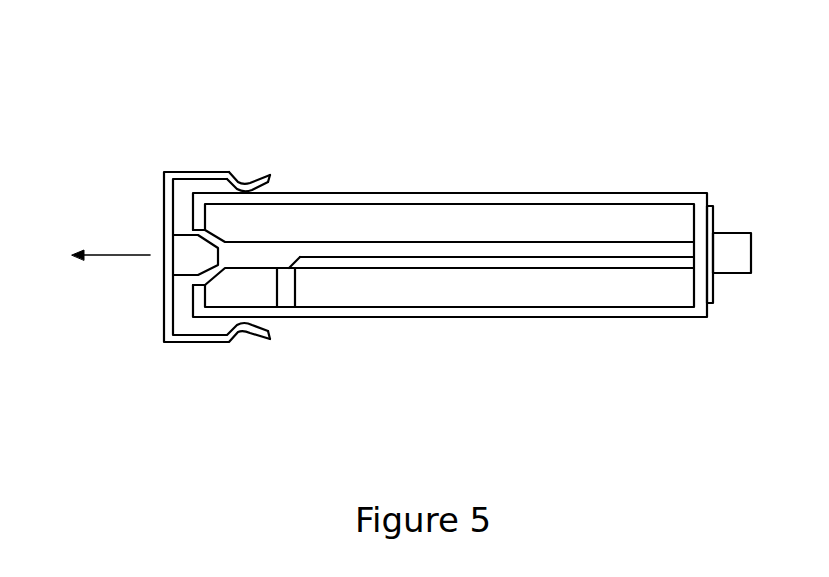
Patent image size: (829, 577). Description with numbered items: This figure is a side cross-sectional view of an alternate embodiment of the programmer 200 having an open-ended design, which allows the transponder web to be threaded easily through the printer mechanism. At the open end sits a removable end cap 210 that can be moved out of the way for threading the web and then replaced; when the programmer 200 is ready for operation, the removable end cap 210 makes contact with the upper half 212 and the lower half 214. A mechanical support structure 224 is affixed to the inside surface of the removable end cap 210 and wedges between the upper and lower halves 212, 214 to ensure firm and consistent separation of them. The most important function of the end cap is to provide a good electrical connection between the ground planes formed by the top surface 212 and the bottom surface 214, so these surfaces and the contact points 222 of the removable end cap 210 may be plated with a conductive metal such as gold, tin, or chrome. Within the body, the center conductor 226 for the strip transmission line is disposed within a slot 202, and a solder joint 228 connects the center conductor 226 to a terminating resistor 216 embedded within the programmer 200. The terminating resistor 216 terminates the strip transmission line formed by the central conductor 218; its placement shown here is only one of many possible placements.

The programmer 200 is at (271, 118).
The slot 202 is at (443, 245).
The removable end cap 210 is at (162, 332).
The upper half 212 is at (538, 192).
The lower half 214 is at (418, 318).
The terminating resistor 216 is at (290, 293).
The central conductor 218 is at (552, 268).
The contact points 222 is at (271, 173).
The mechanical support structure 224 is at (181, 241).
The center conductor 226 is at (640, 257).
The solder joint 228 is at (291, 264).